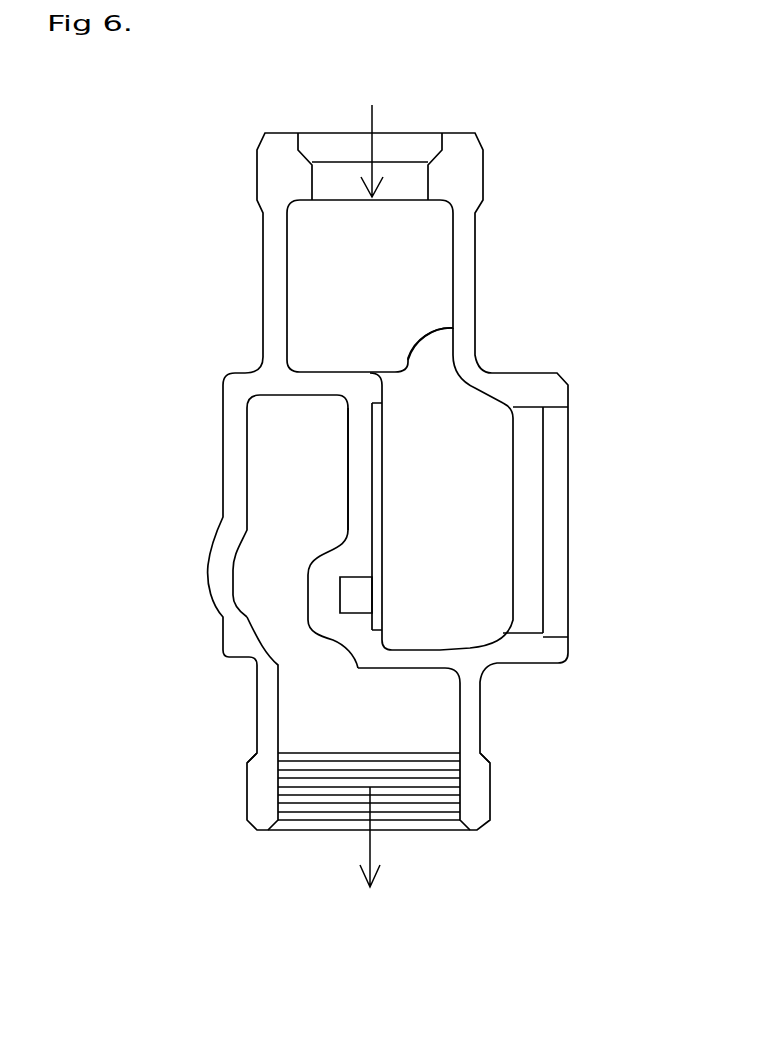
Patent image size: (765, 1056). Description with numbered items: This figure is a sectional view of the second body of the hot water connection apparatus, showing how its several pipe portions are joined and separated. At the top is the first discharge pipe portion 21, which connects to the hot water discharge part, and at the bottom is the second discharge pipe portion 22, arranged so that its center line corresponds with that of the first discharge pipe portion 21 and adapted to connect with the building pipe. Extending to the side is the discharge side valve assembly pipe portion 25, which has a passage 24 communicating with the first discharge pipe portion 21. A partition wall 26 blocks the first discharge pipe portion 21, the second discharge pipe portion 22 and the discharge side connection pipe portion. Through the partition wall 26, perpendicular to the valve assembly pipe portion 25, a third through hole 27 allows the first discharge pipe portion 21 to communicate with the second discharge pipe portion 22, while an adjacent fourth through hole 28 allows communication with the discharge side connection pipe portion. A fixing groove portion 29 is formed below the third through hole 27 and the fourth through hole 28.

The first discharge pipe portion 21 is at (472, 278).
The second discharge pipe portion 22 is at (492, 784).
The passage 24 is at (418, 335).
The discharge side valve assembly pipe portion 25 is at (531, 383).
The partition wall 26 is at (348, 465).
The third through hole 27 is at (360, 417).
The fourth through hole 28 is at (377, 516).
The fixing groove portion 29 is at (362, 592).